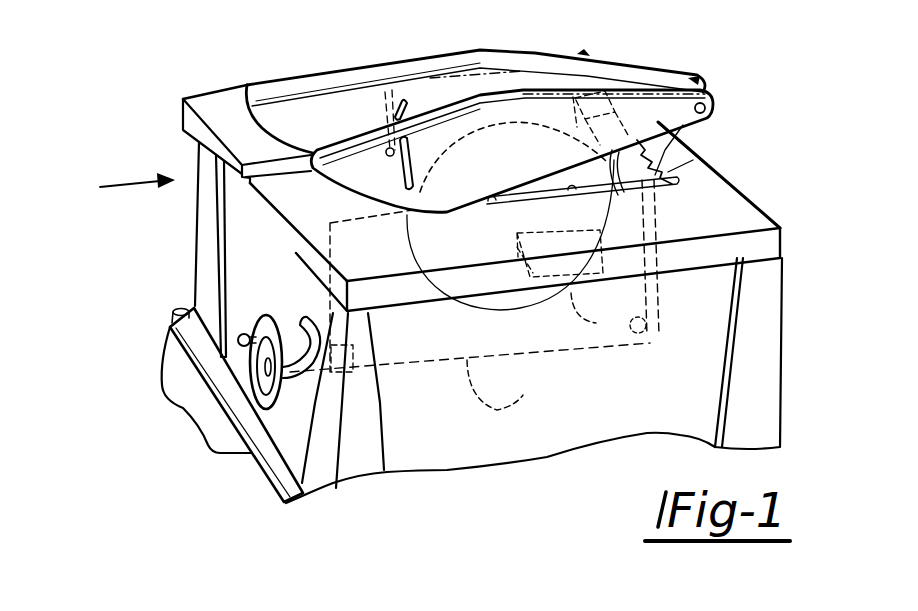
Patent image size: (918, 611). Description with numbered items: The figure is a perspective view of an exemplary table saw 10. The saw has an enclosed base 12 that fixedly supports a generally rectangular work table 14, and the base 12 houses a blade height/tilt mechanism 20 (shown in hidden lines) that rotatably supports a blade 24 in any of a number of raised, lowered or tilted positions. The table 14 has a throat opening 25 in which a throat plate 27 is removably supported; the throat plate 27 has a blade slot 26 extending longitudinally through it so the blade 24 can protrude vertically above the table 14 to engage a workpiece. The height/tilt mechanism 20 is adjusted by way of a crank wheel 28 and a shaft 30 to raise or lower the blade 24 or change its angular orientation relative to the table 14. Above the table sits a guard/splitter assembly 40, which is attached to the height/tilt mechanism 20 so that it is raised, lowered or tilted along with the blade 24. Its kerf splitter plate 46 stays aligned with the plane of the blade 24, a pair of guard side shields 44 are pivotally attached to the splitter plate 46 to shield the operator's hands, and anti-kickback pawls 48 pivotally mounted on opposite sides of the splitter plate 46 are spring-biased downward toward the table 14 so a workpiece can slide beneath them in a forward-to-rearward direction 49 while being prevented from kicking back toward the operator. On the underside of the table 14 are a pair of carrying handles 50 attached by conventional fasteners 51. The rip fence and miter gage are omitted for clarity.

The table saw 10 is at (132, 112).
The enclosed base 12 is at (766, 387).
The work table 14 is at (757, 212).
The blade height/tilt mechanism 20 is at (470, 376).
The blade 24 is at (491, 172).
The throat opening 25 is at (487, 207).
The blade slot 26 is at (567, 190).
The throat plate 27 is at (706, 163).
The crank wheel 28 is at (227, 457).
The shaft 30 is at (303, 390).
The guard/splitter assembly 40 is at (538, 50).
The guard side shields 44 is at (308, 84).
The kerf splitter plate 46 is at (682, 139).
The anti-kickback pawls 48 is at (677, 147).
The forward-to-rearward direction 49 is at (134, 187).
The carrying handles 50 is at (575, 322).
The fasteners 51 is at (520, 268).